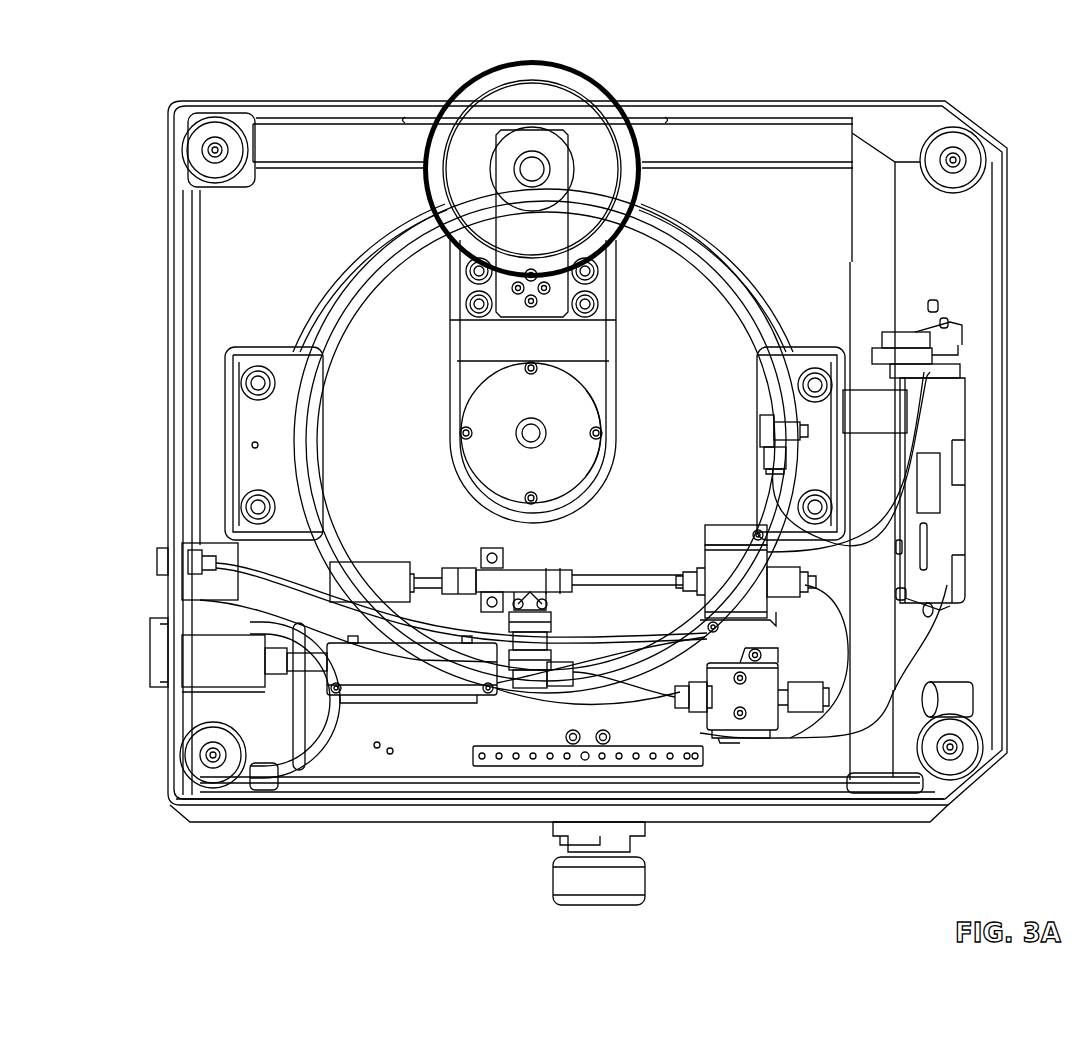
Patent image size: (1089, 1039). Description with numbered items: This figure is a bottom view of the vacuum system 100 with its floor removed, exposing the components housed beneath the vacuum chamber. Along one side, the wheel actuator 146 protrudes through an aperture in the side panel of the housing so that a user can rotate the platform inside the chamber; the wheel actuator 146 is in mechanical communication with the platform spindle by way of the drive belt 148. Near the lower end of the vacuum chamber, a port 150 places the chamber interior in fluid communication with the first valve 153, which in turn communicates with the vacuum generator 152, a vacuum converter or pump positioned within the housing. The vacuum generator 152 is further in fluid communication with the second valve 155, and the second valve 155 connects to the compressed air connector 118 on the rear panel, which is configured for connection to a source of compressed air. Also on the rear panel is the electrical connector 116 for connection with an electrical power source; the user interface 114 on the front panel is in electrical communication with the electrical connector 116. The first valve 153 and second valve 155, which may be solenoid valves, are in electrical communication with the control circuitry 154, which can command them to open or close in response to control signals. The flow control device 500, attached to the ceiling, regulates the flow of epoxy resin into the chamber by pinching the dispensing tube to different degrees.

The vacuum system 100 is at (160, 90).
The wheel actuator 146 is at (588, 88).
The drive belt 148 is at (582, 352).
The port 150 is at (762, 452).
The vacuum generator 152 is at (482, 578).
The first valve 153 is at (755, 708).
The control circuitry 154 is at (903, 328).
The second valve 155 is at (716, 562).
The user interface 114 is at (942, 406).
The electrical connector 116 is at (155, 658).
The compressed air connector 118 is at (158, 563).
The flow control device 500 is at (656, 881).